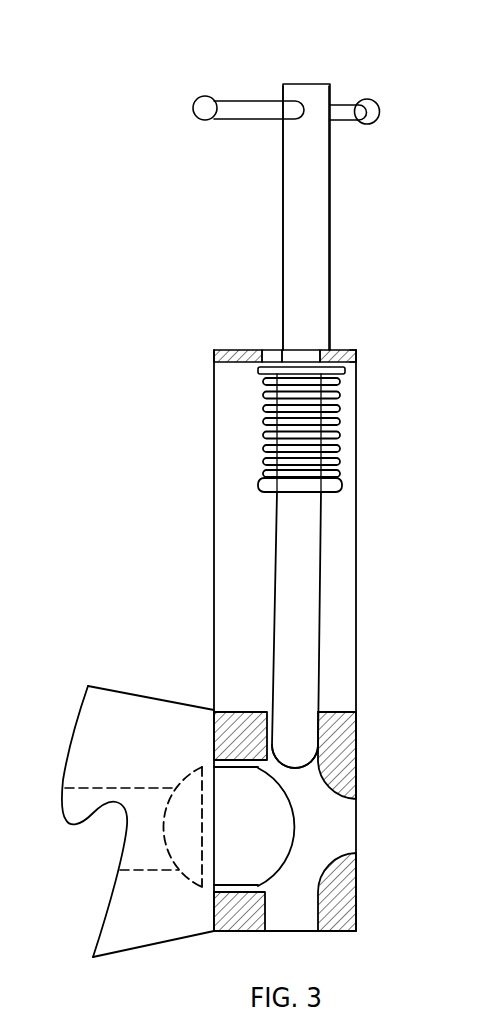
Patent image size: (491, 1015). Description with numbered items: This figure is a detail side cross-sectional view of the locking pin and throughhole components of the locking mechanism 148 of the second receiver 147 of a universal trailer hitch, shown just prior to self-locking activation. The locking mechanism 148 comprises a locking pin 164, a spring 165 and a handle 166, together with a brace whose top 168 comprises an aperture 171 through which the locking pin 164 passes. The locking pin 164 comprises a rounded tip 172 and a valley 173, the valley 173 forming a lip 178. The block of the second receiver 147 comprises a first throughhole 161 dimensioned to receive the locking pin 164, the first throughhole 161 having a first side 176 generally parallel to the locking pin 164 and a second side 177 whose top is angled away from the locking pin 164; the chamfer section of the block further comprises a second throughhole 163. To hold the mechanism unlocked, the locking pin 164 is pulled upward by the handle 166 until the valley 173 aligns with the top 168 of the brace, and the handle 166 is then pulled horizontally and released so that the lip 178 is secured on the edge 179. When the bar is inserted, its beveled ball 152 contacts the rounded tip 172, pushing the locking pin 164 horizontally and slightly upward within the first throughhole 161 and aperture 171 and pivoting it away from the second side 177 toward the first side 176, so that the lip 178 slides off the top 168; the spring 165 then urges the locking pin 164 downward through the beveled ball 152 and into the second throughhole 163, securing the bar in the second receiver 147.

The second receiver 147 is at (122, 730).
The locking mechanism 148 is at (407, 355).
The beveled ball 152 is at (265, 870).
The first throughhole 161 is at (320, 719).
The second throughhole 163 is at (290, 915).
The locking pin 164 is at (292, 596).
The spring 165 is at (332, 418).
The handle 166 is at (248, 108).
The top 168 is at (342, 348).
The aperture 171 is at (275, 347).
The rounded tip 172 is at (297, 768).
The valley 173 is at (305, 353).
The first side 176 is at (276, 733).
The second side 177 is at (358, 733).
The lip 178 is at (321, 346).
The edge 179 is at (357, 356).